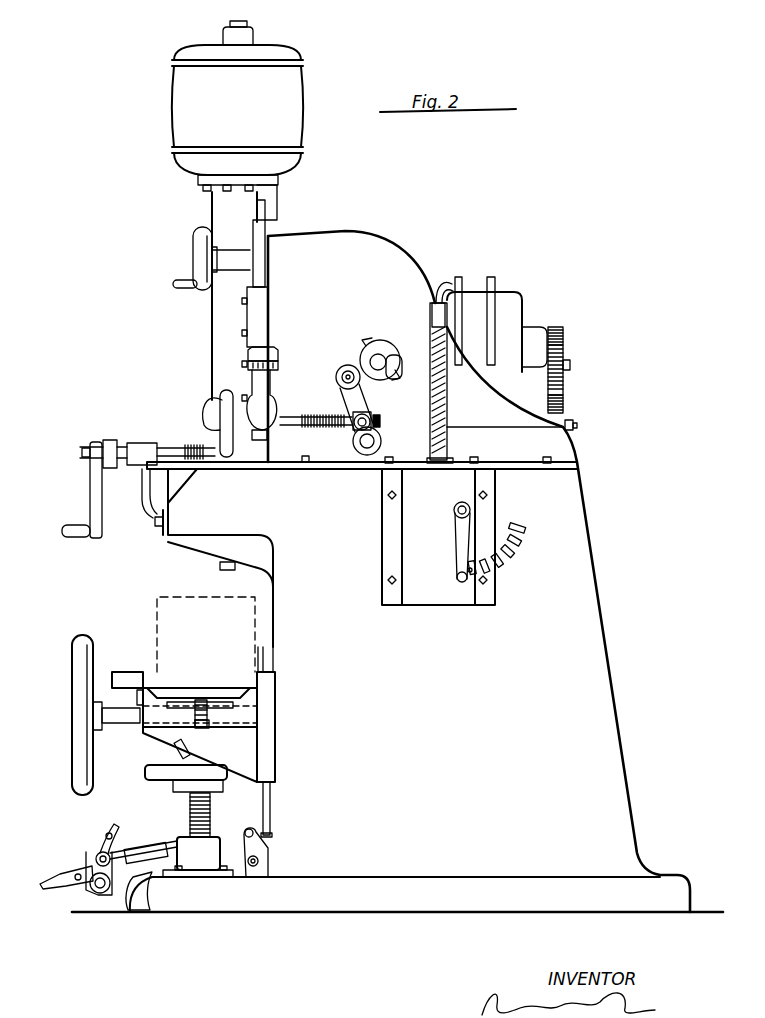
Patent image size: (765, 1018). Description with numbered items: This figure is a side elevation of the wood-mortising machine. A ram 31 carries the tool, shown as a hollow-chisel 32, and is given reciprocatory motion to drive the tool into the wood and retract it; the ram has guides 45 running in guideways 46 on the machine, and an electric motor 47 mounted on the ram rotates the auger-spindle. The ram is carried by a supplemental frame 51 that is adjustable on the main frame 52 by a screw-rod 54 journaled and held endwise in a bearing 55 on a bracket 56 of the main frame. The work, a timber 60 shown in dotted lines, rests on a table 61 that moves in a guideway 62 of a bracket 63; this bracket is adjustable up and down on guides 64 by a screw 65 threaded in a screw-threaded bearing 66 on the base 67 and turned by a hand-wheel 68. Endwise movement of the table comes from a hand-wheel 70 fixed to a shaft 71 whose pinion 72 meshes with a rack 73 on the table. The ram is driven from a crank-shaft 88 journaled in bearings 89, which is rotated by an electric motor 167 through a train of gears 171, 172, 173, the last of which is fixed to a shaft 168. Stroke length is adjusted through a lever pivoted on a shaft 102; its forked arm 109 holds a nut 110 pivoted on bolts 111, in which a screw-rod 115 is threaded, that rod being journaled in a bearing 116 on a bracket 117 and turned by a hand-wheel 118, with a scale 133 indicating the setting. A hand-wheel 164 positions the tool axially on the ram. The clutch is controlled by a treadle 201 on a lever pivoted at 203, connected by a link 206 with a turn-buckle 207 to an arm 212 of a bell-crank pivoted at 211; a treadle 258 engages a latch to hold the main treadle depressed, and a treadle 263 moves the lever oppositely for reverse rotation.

The electric motor 47 is at (300, 128).
The guides 45 is at (253, 237).
The hand-wheel 164 is at (193, 268).
The guideways 46 is at (247, 316).
The ram 31 is at (212, 322).
The hand-wheel 118 is at (214, 400).
The scale 133 is at (279, 364).
The bracket 117 is at (281, 406).
The screw-rod 115 is at (328, 417).
The bearing 116 is at (268, 433).
The bearing 55 is at (140, 441).
The screw-rod 54 is at (179, 446).
The bracket 56 is at (155, 521).
The hollow-chisel 32 is at (220, 565).
The timber 60 is at (168, 617).
The table 61 is at (148, 674).
The guideway 62 is at (157, 697).
The rack 73 is at (200, 698).
The hand-wheel 70 is at (78, 722).
The shaft 71 is at (128, 722).
The bracket 63 is at (176, 744).
The pinion 72 is at (210, 728).
The hand-wheel 68 is at (167, 780).
The guides 64 is at (273, 796).
The screw 65 is at (211, 812).
The screw-threaded bearing 66 is at (182, 840).
The link 206 is at (116, 828).
The treadle 263 is at (108, 834).
The treadle 258 is at (72, 866).
The treadle 201 is at (84, 892).
The pivot 203 is at (98, 893).
The turn-buckle 207 is at (142, 892).
The base 67 is at (183, 904).
The arm 212 is at (258, 839).
The pivot 211 is at (262, 863).
The supplemental frame 51 is at (415, 282).
The crank-shaft 88 is at (386, 341).
The bearings 89 is at (401, 356).
The shaft 102 is at (346, 365).
The arm 109 is at (358, 396).
The nut 110 is at (368, 414).
The bolts 111 is at (381, 440).
The electric motor 167 is at (513, 318).
The gear 171 is at (561, 328).
The gear 172 is at (565, 356).
The gear 173 is at (563, 402).
The shaft 168 is at (576, 426).
The main frame 52 is at (597, 608).